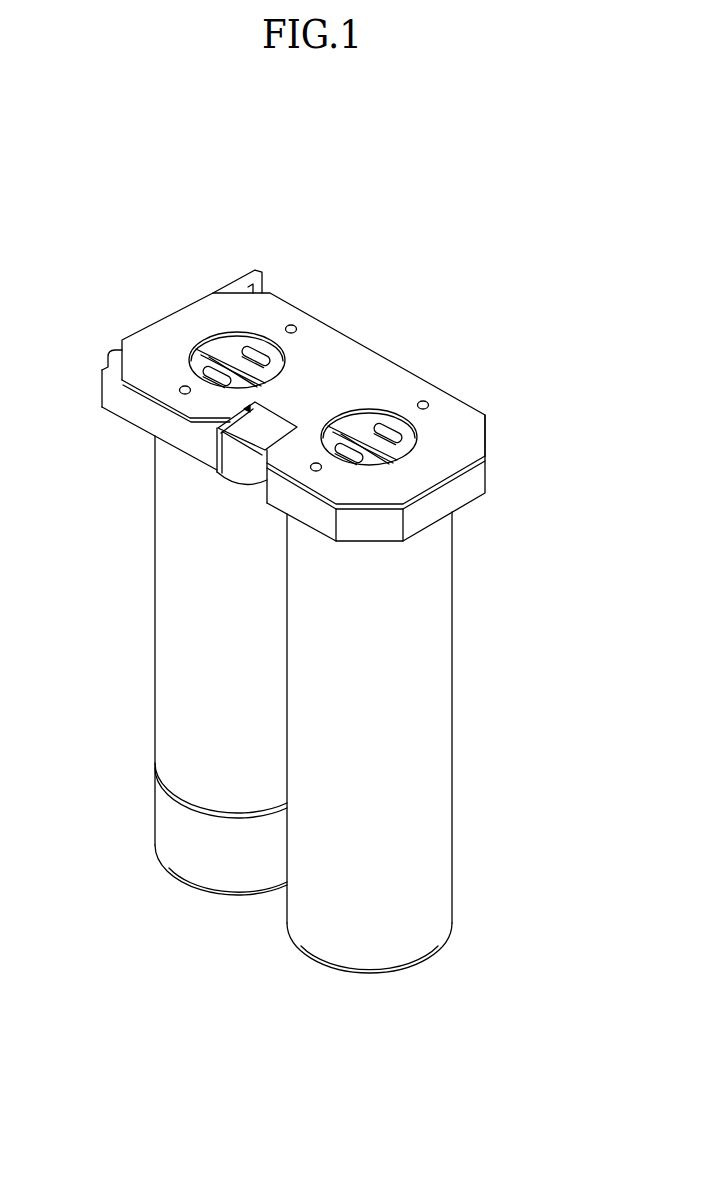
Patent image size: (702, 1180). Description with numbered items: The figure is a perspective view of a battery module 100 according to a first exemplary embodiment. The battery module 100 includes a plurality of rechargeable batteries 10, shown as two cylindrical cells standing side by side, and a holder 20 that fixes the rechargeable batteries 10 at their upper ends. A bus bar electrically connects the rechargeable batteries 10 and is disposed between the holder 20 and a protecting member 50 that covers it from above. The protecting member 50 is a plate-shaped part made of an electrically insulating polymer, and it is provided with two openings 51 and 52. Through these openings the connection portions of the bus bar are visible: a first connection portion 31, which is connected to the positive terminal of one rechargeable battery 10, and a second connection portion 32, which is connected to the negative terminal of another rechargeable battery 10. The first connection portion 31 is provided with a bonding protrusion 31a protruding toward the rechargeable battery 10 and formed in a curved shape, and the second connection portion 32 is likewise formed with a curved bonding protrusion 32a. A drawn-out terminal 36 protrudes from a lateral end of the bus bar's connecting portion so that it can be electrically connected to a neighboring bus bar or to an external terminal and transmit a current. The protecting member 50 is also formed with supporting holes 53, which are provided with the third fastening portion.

The battery module 100 is at (358, 226).
The rechargeable battery 10 is at (144, 753).
The holder 20 is at (480, 479).
The first connection portion 31 is at (410, 379).
The bonding protrusion 31a is at (390, 426).
The second connection portion 32 is at (277, 321).
The bonding protrusion 32a is at (258, 354).
The drawn-out terminal 36 is at (254, 434).
The protecting member 50 is at (187, 326).
The opening 51 is at (366, 410).
The opening 52 is at (232, 334).
The supporting hole 53 is at (182, 386).